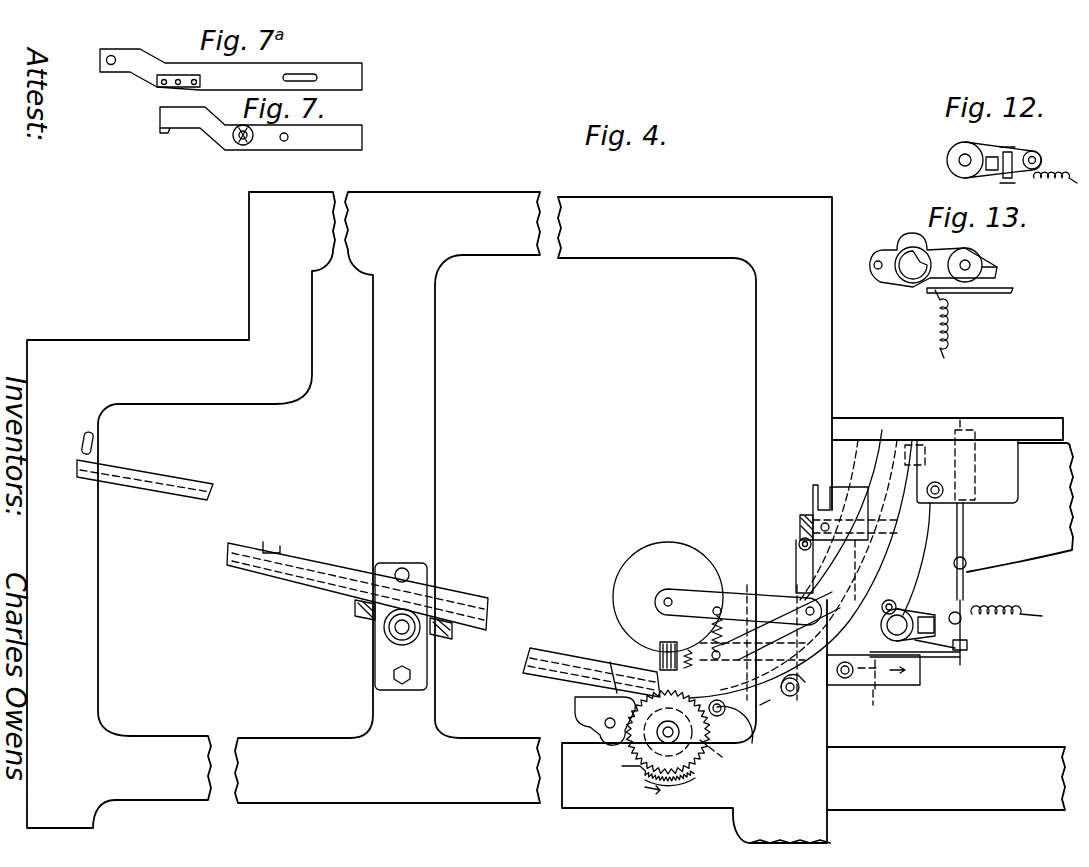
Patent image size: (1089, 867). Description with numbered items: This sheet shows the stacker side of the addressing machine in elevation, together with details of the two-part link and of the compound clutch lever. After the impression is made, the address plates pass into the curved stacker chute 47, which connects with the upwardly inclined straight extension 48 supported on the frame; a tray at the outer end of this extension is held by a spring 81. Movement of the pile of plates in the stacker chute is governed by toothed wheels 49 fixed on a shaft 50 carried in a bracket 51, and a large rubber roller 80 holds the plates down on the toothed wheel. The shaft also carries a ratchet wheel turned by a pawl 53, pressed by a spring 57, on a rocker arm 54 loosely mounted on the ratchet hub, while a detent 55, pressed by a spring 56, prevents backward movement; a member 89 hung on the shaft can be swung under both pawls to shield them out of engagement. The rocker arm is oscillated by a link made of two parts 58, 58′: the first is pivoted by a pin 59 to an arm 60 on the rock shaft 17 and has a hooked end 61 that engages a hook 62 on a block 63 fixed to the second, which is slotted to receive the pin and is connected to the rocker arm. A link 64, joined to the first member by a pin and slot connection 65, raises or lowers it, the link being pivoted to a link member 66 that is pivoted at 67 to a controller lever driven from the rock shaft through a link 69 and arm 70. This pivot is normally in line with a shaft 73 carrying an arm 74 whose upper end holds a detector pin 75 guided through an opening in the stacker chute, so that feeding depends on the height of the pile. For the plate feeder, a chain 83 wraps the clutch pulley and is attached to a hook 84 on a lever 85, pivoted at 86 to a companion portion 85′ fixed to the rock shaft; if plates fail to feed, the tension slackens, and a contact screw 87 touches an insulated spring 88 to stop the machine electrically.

In FIG. 13, the rock shaft 17 is at (910, 272).
In FIG. 4, the rock shaft 17 is at (873, 570).
In FIG. 4, the stacker chute 47 is at (878, 477).
In FIG. 4, the straight extension 48 is at (468, 597).
In FIG. 4, the toothed wheels 49 is at (700, 742).
In FIG. 4, the shaft 50 is at (664, 734).
In FIG. 4, the bracket 51 is at (600, 712).
In FIG. 4, the pawl 53 is at (657, 674).
In FIG. 4, the rocker arm 54 is at (656, 660).
In FIG. 4, the detent 55 is at (722, 720).
In FIG. 4, the spring 56 is at (752, 690).
In FIG. 4, the spring 57 is at (674, 641).
In FIG. 7, the link member 58 is at (326, 141).
In FIG. 4, the link member 58 is at (810, 642).
In FIG. 7A, the link member 58′ is at (338, 57).
In FIG. 4, the link member 58′ is at (793, 696).
In FIG. 7, the pin 59 is at (242, 146).
In FIG. 4, the pin 59 is at (846, 679).
In FIG. 4, the arm 60 is at (888, 685).
In FIG. 7, the hooked end 61 is at (169, 134).
In FIG. 4, the hooked end 61 is at (738, 607).
In FIG. 7A, the hook 62 is at (177, 78).
In FIG. 4, the hook 62 is at (740, 665).
In FIG. 7A, the block 63 is at (163, 86).
In FIG. 4, the link 64 is at (796, 566).
In FIG. 4, the pin and slot connection 65 is at (781, 626).
In FIG. 4, the link member 66 is at (798, 544).
In FIG. 4, the pivot 67 is at (800, 522).
In FIG. 4, the link 69 is at (795, 589).
In FIG. 4, the arm 70 is at (850, 574).
In FIG. 4, the shaft 73 is at (853, 514).
In FIG. 4, the arm 74 is at (951, 505).
In FIG. 4, the pin 75 is at (922, 440).
In FIG. 4, the rubber roller 80 is at (693, 550).
In FIG. 4, the spring 81 is at (84, 445).
In FIG. 4, the chain 83 is at (966, 540).
In FIG. 4, the hook 84 is at (966, 597).
In FIG. 12, the lever 85 is at (1000, 151).
In FIG. 4, the lever 85 is at (936, 614).
In FIG. 13, the lever portion 85′ is at (985, 254).
In FIG. 4, the lever portion 85′ is at (915, 644).
In FIG. 13, the pivot 86 is at (966, 272).
In FIG. 4, the pivot 86 is at (926, 636).
In FIG. 12, the contact screw 87 is at (1018, 172).
In FIG. 4, the contact screw 87 is at (955, 640).
In FIG. 13, the insulated spring 88 is at (1012, 292).
In FIG. 4, the insulated spring 88 is at (961, 662).
In FIG. 4, the member 89 is at (663, 785).